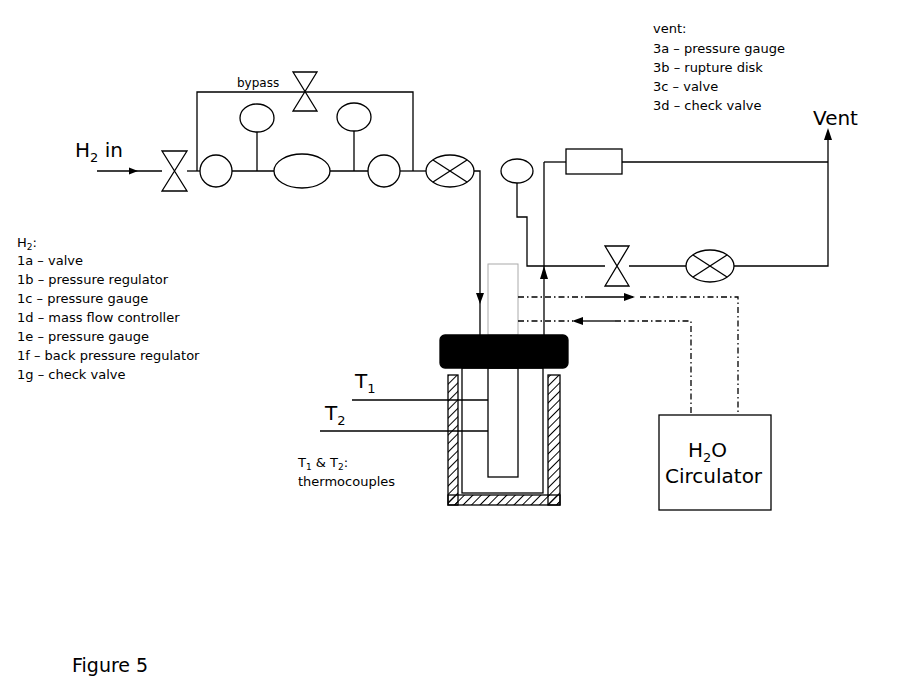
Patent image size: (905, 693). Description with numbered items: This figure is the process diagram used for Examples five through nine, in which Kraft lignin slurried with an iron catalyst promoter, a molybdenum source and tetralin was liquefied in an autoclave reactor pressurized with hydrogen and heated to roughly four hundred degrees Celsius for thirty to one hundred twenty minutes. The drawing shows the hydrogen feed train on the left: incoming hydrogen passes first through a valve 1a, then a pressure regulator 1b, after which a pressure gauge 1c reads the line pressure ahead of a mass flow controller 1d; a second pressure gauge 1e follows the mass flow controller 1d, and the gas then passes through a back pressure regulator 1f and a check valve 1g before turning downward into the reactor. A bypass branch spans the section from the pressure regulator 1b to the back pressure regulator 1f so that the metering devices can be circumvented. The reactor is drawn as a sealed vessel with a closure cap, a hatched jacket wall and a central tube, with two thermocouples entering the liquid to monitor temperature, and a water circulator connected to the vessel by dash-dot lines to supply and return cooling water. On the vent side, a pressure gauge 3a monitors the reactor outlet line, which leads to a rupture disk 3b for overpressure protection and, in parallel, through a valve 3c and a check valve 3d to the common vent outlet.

The valve 1a is at (173, 157).
The pressure regulator 1b is at (216, 171).
The pressure gauge 1c is at (257, 137).
The mass flow controller 1d is at (302, 171).
The pressure gauge 1e is at (354, 137).
The back pressure regulator 1f is at (384, 171).
The check valve 1g is at (450, 158).
The pressure gauge 3a is at (553, 212).
The rupture disk 3b is at (686, 144).
The valve 3c is at (616, 250).
The check valve 3d is at (710, 255).